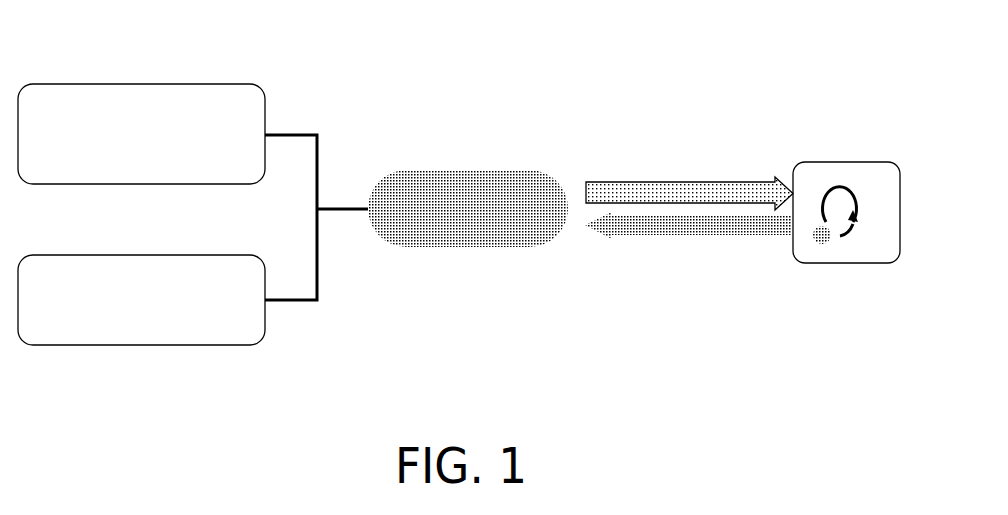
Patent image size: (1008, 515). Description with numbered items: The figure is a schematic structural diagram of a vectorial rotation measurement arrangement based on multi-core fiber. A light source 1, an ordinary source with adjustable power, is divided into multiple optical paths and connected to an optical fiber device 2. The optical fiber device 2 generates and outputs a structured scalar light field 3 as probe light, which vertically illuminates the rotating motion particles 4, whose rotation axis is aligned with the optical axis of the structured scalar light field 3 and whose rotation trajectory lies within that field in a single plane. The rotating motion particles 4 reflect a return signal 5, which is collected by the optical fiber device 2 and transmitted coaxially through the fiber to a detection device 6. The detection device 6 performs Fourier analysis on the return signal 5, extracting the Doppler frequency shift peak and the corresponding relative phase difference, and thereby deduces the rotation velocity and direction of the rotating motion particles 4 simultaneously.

The light source 1 is at (144, 70).
The optical fiber device 2 is at (447, 159).
The structured scalar light field 3 is at (674, 171).
The rotating motion particles 4 is at (834, 152).
The return signal 5 is at (674, 253).
The detection device 6 is at (144, 368).